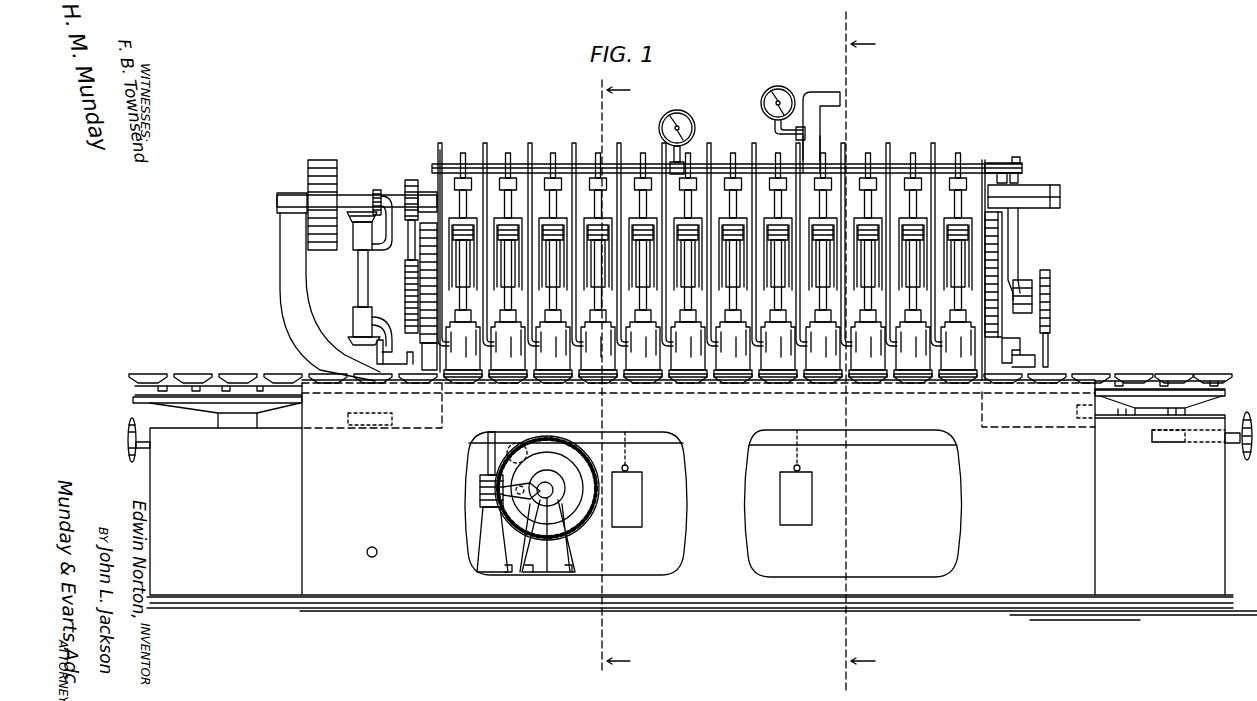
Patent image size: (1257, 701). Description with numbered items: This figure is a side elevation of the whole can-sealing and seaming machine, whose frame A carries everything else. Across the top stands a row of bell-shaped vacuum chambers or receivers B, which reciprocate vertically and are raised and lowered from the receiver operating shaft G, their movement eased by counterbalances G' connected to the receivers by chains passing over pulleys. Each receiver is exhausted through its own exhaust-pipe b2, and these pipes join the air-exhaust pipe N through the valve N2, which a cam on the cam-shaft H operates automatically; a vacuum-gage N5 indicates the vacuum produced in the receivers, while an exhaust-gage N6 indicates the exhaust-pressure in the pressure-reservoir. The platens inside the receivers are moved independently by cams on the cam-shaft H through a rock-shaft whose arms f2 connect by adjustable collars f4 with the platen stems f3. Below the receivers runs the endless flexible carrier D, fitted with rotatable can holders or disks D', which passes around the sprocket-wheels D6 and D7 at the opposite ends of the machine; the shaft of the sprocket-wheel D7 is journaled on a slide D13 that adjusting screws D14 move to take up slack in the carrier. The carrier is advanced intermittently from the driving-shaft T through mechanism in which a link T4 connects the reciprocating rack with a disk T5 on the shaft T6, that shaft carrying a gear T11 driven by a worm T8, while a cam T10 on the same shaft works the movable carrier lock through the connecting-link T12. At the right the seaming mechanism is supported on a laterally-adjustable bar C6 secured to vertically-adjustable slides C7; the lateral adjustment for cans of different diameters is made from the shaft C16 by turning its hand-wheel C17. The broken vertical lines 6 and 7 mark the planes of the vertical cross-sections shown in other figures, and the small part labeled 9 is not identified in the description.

The frame A is at (992, 130).
The vacuum chambers or receivers B is at (710, 265).
The exhaust-pipes b2 is at (950, 124).
The air-exhaust pipe N is at (538, 165).
The valve N2 is at (813, 160).
The vacuum-gage N5 is at (682, 112).
The exhaust-gage N6 is at (783, 88).
The valve stem 9 is at (578, 195).
The arms f2 is at (736, 215).
The stems f3 is at (733, 293).
The adjustable collars f4 is at (730, 230).
The driving-shaft T is at (353, 205).
The link T4 is at (488, 462).
The disk T5 is at (575, 530).
The shaft T6 is at (528, 500).
The worm T8 is at (490, 520).
The cam T10 is at (567, 472).
The gear T11 is at (553, 500).
The connecting-link T12 is at (492, 500).
The receiver operating shaft G is at (1027, 268).
The counterbalances G' is at (712, 493).
The cam-shaft H is at (1022, 290).
The laterally-adjustable bar C6 is at (1020, 348).
The vertically-adjustable slides C7 is at (1030, 362).
The shaft C16 is at (910, 445).
The hand-wheel C17 is at (128, 444).
The endless flexible carrier D is at (686, 399).
The rotatable can holders or disks D' is at (680, 361).
The pulley or sprocket-wheel D6 is at (198, 396).
The pulley or sprocket-wheel D7 is at (1225, 393).
The slide D13 is at (1152, 412).
The adjusting screws D14 is at (1243, 442).
The section line 6 is at (614, 378).
The section line 7 is at (858, 354).